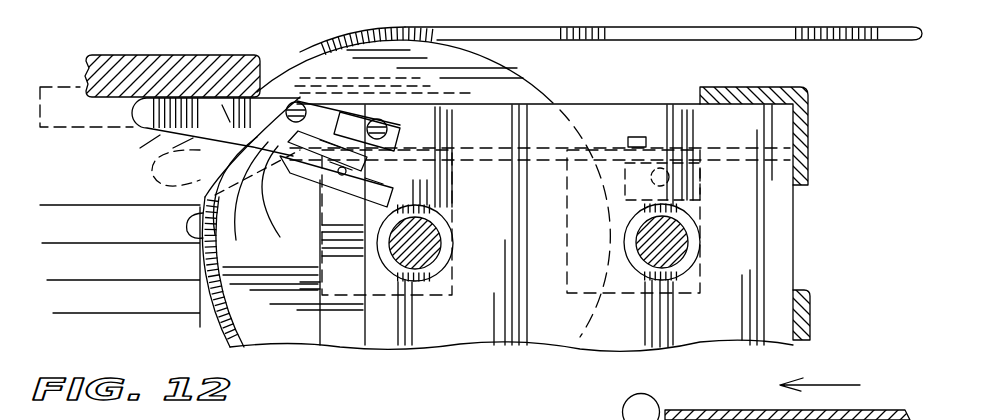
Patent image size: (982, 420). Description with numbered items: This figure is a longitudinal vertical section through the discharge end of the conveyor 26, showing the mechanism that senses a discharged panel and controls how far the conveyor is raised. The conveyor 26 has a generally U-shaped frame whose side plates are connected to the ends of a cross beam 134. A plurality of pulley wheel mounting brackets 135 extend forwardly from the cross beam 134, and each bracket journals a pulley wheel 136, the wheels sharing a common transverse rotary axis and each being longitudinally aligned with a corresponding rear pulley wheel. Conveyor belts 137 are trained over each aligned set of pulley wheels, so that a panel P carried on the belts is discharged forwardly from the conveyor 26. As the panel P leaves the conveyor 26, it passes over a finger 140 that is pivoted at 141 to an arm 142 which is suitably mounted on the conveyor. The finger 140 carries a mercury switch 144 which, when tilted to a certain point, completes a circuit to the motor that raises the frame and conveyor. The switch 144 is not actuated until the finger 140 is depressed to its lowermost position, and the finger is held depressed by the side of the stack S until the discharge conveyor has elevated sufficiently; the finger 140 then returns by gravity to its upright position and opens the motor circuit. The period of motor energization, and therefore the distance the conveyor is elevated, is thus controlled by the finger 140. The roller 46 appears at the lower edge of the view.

The conveyor 26 is at (417, 23).
The roller 46 is at (614, 407).
The cross beam 134 is at (810, 140).
The pulley wheel mounting brackets 135 is at (460, 335).
The pulley wheel 136 is at (332, 328).
The conveyor belts 137 is at (630, 27).
The finger 140 is at (163, 132).
The pivot 141 is at (297, 102).
The arm 142 is at (360, 105).
The mercury switch 144 is at (223, 258).
The panel P is at (130, 60).
The sheet S is at (109, 330).